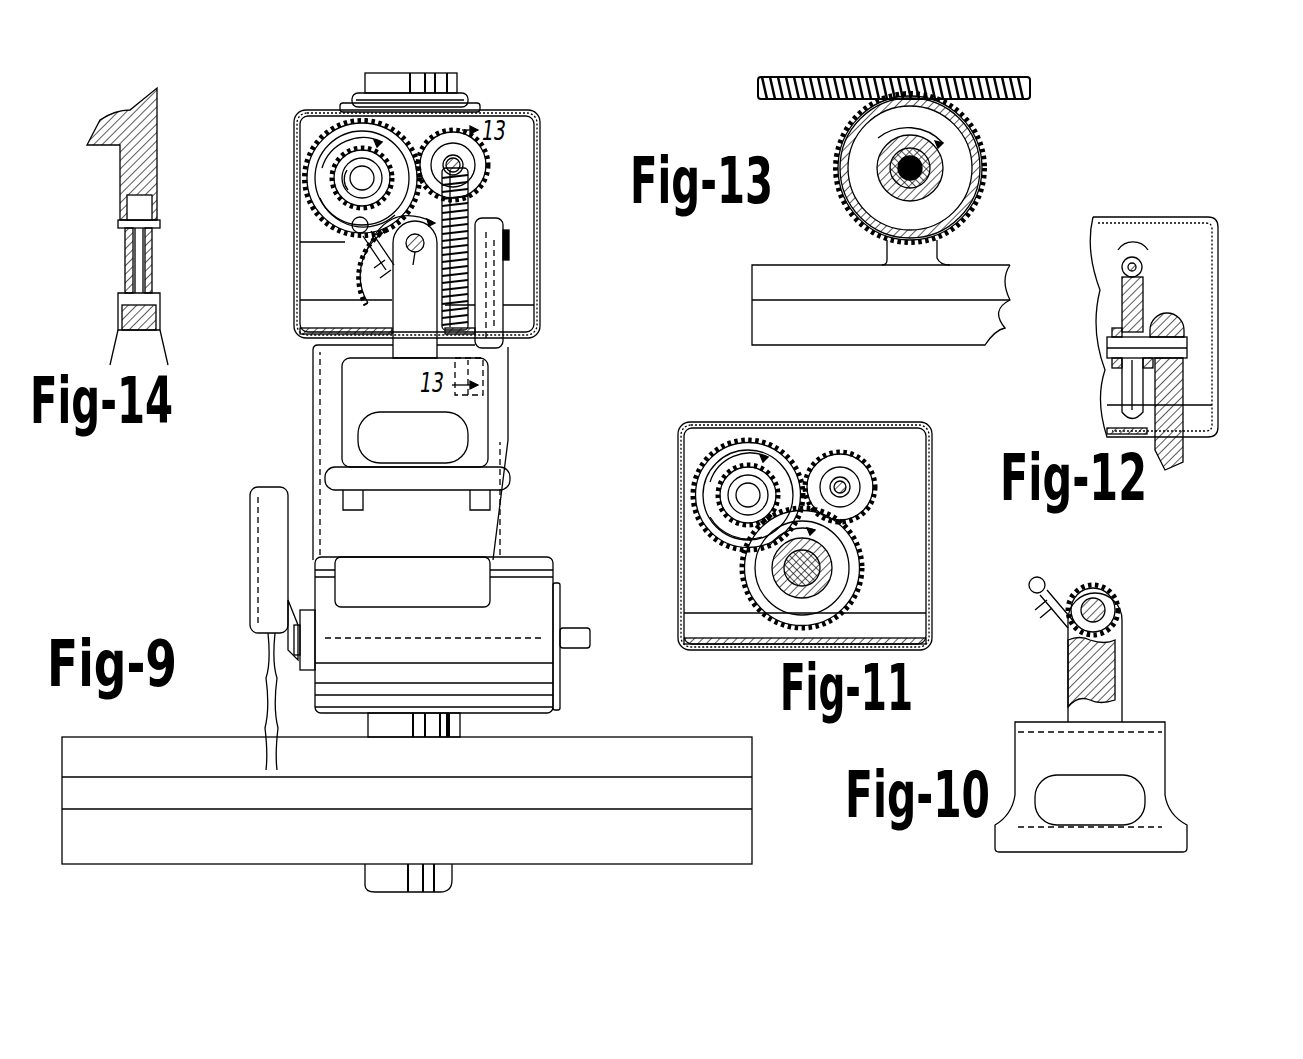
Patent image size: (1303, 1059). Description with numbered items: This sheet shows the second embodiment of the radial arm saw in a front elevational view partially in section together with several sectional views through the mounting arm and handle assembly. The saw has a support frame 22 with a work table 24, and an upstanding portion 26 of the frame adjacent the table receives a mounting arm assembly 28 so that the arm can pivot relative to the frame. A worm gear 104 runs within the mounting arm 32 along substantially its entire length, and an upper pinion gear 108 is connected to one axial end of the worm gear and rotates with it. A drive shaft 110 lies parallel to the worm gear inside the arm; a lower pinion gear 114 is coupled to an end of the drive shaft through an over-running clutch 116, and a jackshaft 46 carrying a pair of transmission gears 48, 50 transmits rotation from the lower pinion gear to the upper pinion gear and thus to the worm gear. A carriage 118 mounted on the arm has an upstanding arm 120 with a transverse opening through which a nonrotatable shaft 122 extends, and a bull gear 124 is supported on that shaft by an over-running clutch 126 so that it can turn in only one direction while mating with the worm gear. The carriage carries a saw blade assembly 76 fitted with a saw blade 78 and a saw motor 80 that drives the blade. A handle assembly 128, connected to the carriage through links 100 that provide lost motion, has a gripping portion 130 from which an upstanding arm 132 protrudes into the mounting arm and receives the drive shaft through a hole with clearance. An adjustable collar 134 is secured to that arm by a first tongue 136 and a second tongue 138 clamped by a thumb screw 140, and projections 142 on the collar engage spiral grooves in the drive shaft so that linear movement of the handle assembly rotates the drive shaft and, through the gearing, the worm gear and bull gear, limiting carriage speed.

In FIG. 9, the support frame 22 is at (455, 880).
In FIG. 9, the work table 24 is at (620, 737).
In FIG. 9, the upstanding portion 26 is at (456, 724).
In FIG. 9, the mounting arm assembly 28 is at (470, 108).
In FIG. 9, the mounting arm 32 is at (520, 118).
In FIG. 11, the mounting arm 32 is at (880, 430).
In FIG. 12, the mounting arm 32 is at (1145, 217).
In FIG. 9, the jackshaft 46 is at (359, 173).
In FIG. 11, the jackshaft 46 is at (746, 490).
In FIG. 9, the transmission gear 48 is at (340, 165).
In FIG. 11, the transmission gear 48 is at (692, 487).
In FIG. 9, the transmission gear 50 is at (325, 197).
In FIG. 11, the transmission gear 50 is at (715, 522).
In FIG. 9, the saw blade assembly 76 is at (550, 559).
In FIG. 9, the saw blade 78 is at (266, 692).
In FIG. 9, the saw motor 80 is at (528, 627).
In FIG. 14, the links 100 is at (125, 260).
In FIG. 9, the worm gear 104 is at (470, 188).
In FIG. 11, the worm gear 104 is at (845, 483).
In FIG. 13, the worm gear 104 is at (790, 100).
In FIG. 12, the worm gear 104 is at (1142, 262).
In FIG. 9, the upper pinion gear 108 is at (475, 160).
In FIG. 11, the upper pinion gear 108 is at (862, 490).
In FIG. 9, the drive shaft 110 is at (401, 287).
In FIG. 11, the drive shaft 110 is at (778, 600).
In FIG. 9, the lower pinion gear 114 is at (380, 300).
In FIG. 11, the lower pinion gear 114 is at (842, 566).
In FIG. 11, the over-running clutch 116 is at (828, 582).
In FIG. 9, the carriage 118 is at (512, 371).
In FIG. 13, the carriage 118 is at (820, 240).
In FIG. 9, the upstanding arm 120 is at (500, 284).
In FIG. 13, the upstanding arm 120 is at (920, 256).
In FIG. 12, the upstanding arm 120 is at (1170, 400).
In FIG. 13, the nonrotatable shaft 122 is at (930, 160).
In FIG. 12, the nonrotatable shaft 122 is at (1185, 345).
In FIG. 9, the bull gear 124 is at (468, 214).
In FIG. 13, the bull gear 124 is at (855, 198).
In FIG. 12, the bull gear 124 is at (1143, 300).
In FIG. 13, the over-running clutch 126 is at (945, 175).
In FIG. 12, the over-running clutch 126 is at (1150, 320).
In FIG. 9, the handle assembly 128 is at (340, 395).
In FIG. 10, the handle assembly 128 is at (1168, 760).
In FIG. 14, the handle assembly 128 is at (160, 168).
In FIG. 9, the gripping portion 130 is at (422, 478).
In FIG. 10, the gripping portion 130 is at (1088, 830).
In FIG. 9, the upstanding arm 132 is at (412, 348).
In FIG. 10, the upstanding arm 132 is at (1122, 680).
In FIG. 10, the adjustable collar 134 is at (1120, 615).
In FIG. 9, the first tongue 136 is at (368, 248).
In FIG. 10, the first tongue 136 is at (1075, 600).
In FIG. 9, the second tongue 138 is at (376, 268).
In FIG. 10, the second tongue 138 is at (1050, 632).
In FIG. 9, the thumb screw 140 is at (352, 227).
In FIG. 10, the thumb screw 140 is at (1032, 580).
In FIG. 10, the projections 142 is at (1120, 600).